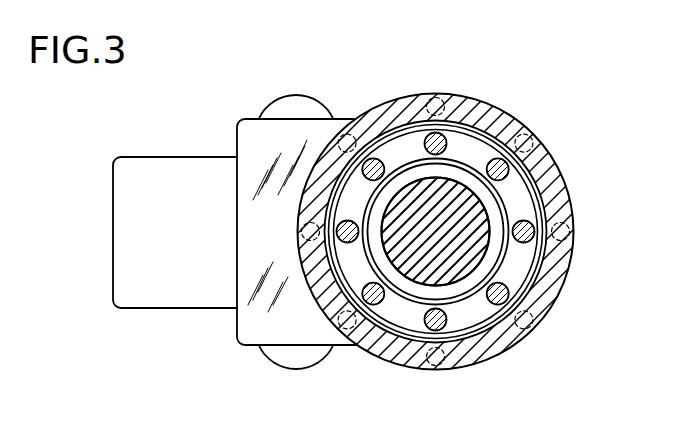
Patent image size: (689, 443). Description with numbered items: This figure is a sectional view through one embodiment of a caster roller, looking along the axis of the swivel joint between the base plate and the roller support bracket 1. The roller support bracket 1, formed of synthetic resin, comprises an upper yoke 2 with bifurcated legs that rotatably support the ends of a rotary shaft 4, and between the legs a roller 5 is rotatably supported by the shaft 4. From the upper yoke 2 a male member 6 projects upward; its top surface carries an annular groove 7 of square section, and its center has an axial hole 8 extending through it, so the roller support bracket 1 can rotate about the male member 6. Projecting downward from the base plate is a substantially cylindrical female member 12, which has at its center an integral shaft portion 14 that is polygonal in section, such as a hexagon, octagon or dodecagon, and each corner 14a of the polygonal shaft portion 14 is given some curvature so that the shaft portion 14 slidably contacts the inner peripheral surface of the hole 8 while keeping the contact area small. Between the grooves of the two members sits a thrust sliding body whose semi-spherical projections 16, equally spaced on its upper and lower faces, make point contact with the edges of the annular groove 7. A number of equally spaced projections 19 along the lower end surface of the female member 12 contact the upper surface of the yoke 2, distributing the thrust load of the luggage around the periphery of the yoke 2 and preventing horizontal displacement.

The roller support bracket 1 is at (230, 126).
The upper yoke 2 is at (263, 318).
The rotary shaft 4 is at (305, 352).
The roller 5 is at (150, 276).
The male member 6 is at (471, 125).
The annular groove 7 is at (517, 263).
The axial hole 8 is at (527, 188).
The female member 12 is at (552, 157).
The shaft portion 14 is at (443, 212).
The corner 14a is at (474, 190).
The projection 16 is at (412, 145).
The projections 19 is at (533, 136).